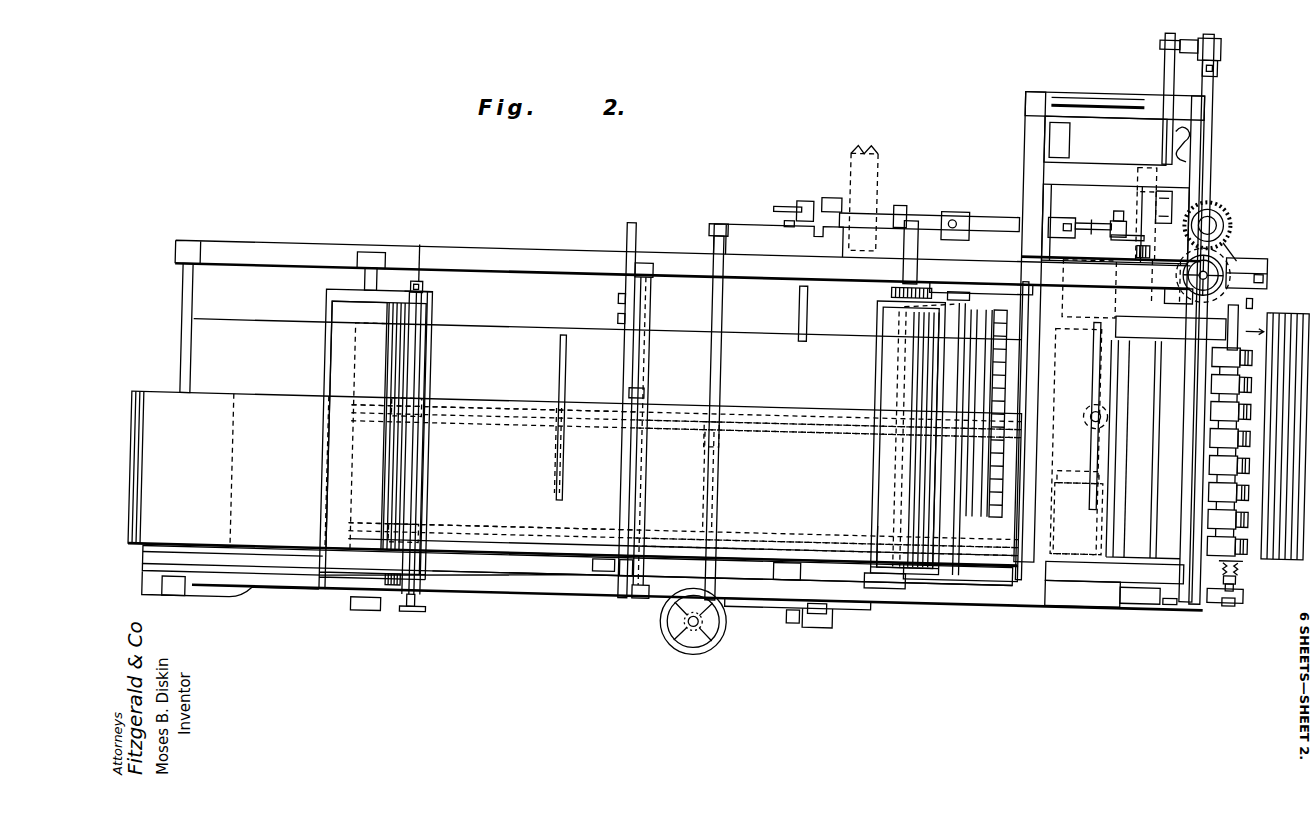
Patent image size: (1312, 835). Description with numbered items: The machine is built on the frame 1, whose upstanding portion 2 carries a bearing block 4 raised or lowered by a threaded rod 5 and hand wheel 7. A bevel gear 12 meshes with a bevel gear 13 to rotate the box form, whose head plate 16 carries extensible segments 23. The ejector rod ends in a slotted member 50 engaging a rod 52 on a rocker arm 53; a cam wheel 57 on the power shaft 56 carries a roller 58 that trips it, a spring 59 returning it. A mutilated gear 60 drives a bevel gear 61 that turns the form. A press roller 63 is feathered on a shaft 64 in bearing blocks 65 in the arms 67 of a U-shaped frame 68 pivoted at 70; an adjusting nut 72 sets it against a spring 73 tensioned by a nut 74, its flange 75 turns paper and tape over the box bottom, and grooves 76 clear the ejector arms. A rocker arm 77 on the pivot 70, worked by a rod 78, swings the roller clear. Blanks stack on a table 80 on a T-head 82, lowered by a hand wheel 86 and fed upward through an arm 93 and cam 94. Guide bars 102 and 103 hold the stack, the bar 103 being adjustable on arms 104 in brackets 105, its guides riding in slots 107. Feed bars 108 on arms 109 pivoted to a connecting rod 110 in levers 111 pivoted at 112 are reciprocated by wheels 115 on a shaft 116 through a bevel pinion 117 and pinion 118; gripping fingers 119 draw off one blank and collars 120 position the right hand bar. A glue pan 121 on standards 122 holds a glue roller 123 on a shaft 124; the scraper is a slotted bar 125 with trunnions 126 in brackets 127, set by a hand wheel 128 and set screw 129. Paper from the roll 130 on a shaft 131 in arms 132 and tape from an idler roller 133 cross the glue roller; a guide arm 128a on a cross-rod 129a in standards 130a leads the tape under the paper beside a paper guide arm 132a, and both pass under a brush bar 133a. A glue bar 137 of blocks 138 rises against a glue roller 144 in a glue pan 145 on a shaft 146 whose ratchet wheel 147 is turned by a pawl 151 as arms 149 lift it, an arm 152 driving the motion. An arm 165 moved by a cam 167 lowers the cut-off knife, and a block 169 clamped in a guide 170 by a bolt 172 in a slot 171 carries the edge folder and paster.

The frame 1 is at (288, 252).
The upstanding portion 2 is at (1267, 258).
The bearing block 4 is at (1262, 243).
The threaded rod 5 is at (1250, 273).
The hand wheel 7 is at (1183, 264).
The bevel gear 12 is at (1220, 248).
The bevel gear 13 is at (1222, 204).
The head plate 16 is at (1130, 302).
The segments 23 is at (1135, 482).
The member 50 is at (1210, 26).
The rod 52 is at (1184, 26).
The rocker arm 53 is at (1159, 46).
The power shaft 56 is at (920, 216).
The cam wheel 57 is at (1135, 160).
The roller 58 is at (1167, 195).
The retractile spring 59 is at (1172, 126).
The mutilated gear 60 is at (1196, 200).
The bevel gear 61 is at (1226, 230).
The press roller 63 is at (1152, 462).
The shaft 64 is at (1227, 316).
The bearing blocks 65 is at (1238, 592).
The arms 67 is at (1253, 286).
The U-shaped frame member 68 is at (1192, 425).
The pivot 70 is at (1166, 284).
The adjusting nut 72 is at (1252, 318).
The spring 73 is at (1243, 565).
The nut 74 is at (1241, 576).
The turning flange 75 is at (1250, 551).
The circumferential grooves 76 is at (1226, 382).
The rocker arm 77 is at (1096, 218).
The rod 78 is at (1130, 223).
The table 80 is at (504, 330).
The T-head 82 is at (775, 606).
The hand wheel 86 is at (682, 645).
The arm 93 is at (994, 208).
The cam 94 is at (968, 226).
The guide bar 102 is at (786, 546).
The guide bar 103 is at (784, 428).
The arms 104 is at (626, 287).
The brackets 105 is at (651, 310).
The slots 107 is at (562, 364).
The feed bars 108 is at (494, 428).
The arms 109 is at (619, 428).
The connecting rod 110 is at (713, 346).
The actuating levers 111 is at (742, 605).
The pivot 112 is at (803, 197).
The wheel 115 is at (778, 203).
The transverse shaft 116 is at (800, 299).
The bevel pinion 117 is at (786, 223).
The pinion 118 is at (778, 250).
The gripping finger 119 is at (400, 424).
The collars 120 is at (725, 420).
The glue pan 121 is at (327, 348).
The standards 122 is at (368, 259).
The glue roller 123 is at (365, 425).
The shaft 124 is at (365, 287).
The slotted bar 125 is at (430, 362).
The trunnions 126 is at (417, 286).
The brackets 127 is at (424, 285).
The hand wheel 128 is at (420, 617).
The guide arm 128a is at (655, 556).
The set screw 129 is at (430, 295).
The cross-rod 129a is at (632, 390).
The roll of paper 130 is at (575, 478).
The standards 130a is at (650, 263).
The shaft 131 is at (183, 333).
The arms 132 is at (232, 252).
The paper guide arm 132a is at (650, 398).
The idler roller 133 is at (210, 606).
The brush bar 133a is at (966, 450).
The glue bar 137 is at (966, 500).
The segments 138 is at (995, 370).
The glue roller 144 is at (884, 452).
The glue pan 145 is at (878, 514).
The shaft 146 is at (915, 303).
The ratchet wheel 147 is at (892, 287).
The arms 149 is at (975, 285).
The pawl 151 is at (968, 290).
The arm 152 is at (912, 200).
The arm 165 is at (1050, 140).
The cam 167 is at (1060, 207).
The block 169 is at (1078, 481).
The guide 170 is at (1078, 519).
The slot 171 is at (1097, 480).
The clamping bolt 172 is at (1094, 400).